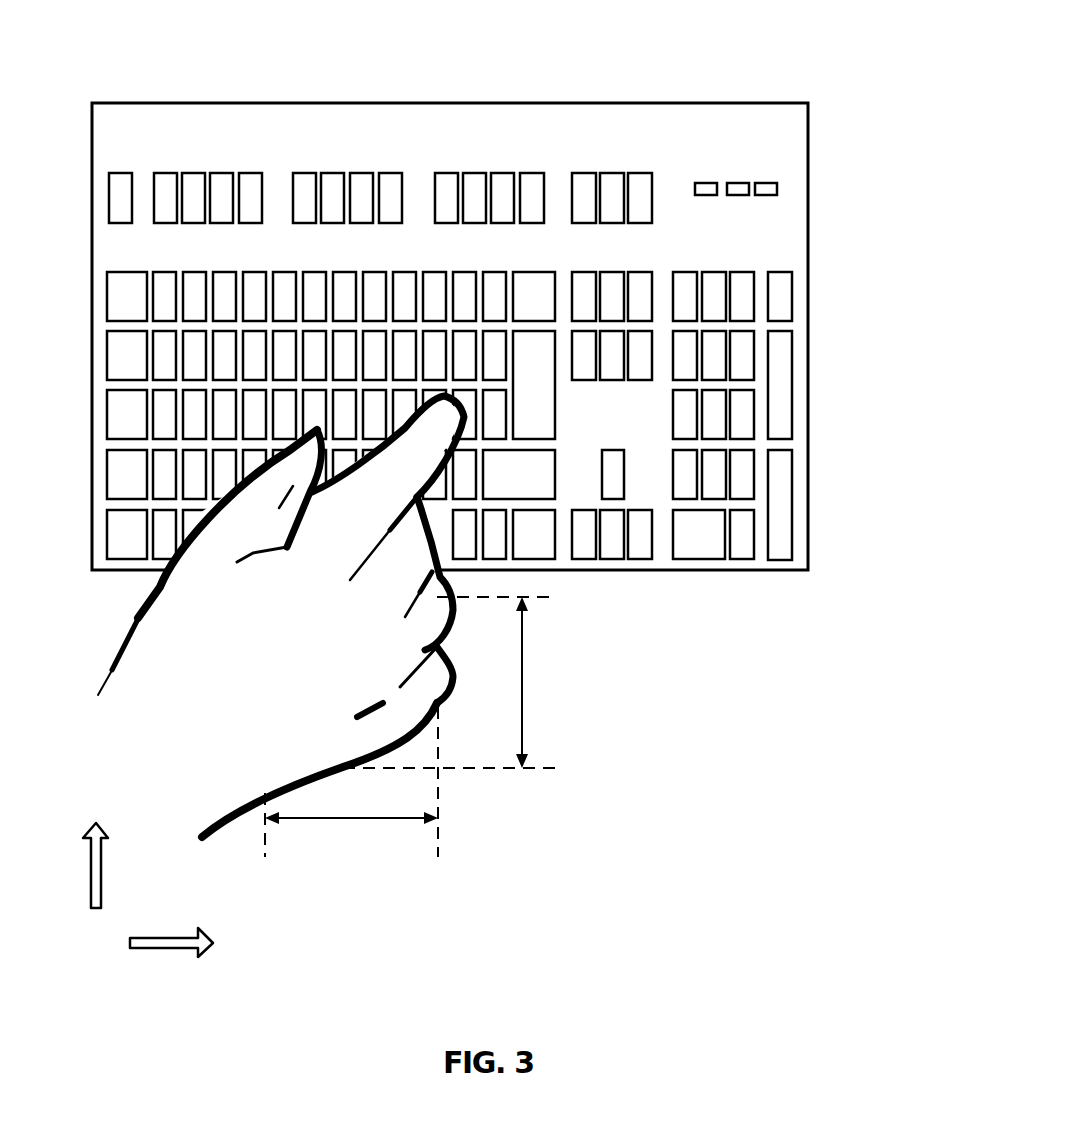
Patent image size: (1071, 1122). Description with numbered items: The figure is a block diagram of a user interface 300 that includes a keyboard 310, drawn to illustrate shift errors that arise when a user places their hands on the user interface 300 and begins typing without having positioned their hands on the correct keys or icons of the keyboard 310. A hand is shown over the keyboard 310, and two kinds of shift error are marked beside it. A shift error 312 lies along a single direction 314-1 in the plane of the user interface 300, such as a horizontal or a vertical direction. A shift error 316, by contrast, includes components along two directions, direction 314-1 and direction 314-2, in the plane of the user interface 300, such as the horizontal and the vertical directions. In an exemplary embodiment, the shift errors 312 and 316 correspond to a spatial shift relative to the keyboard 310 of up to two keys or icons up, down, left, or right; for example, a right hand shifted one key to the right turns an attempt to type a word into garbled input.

The user interface 300 is at (737, 56).
The keyboard 310 is at (449, 337).
The shift error 312 is at (360, 820).
The direction 314-1 is at (170, 948).
The direction 314-2 is at (103, 863).
The shift error 316 is at (524, 710).